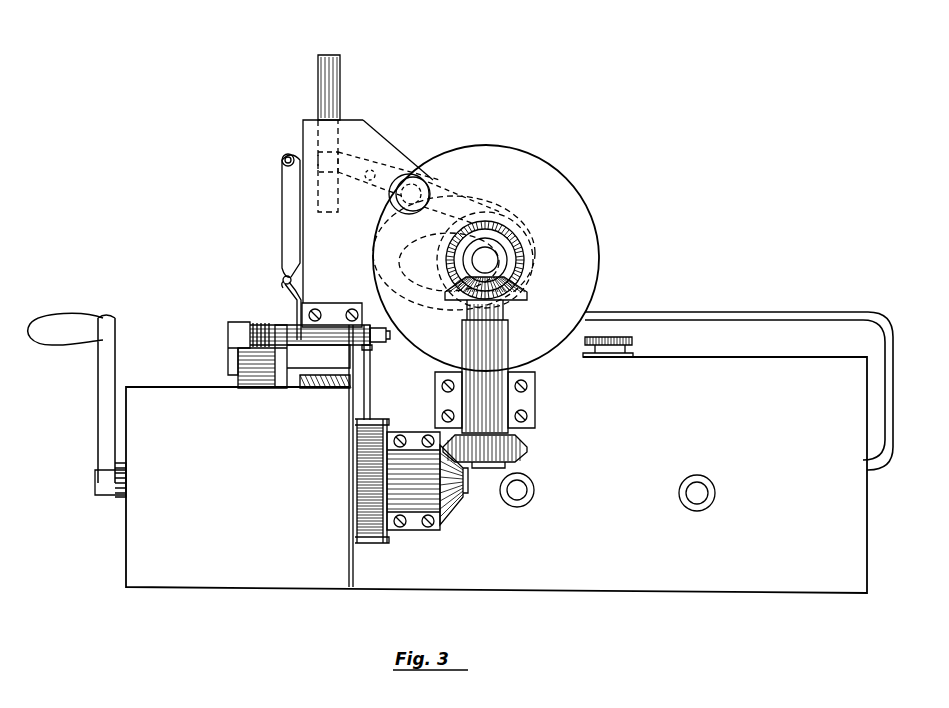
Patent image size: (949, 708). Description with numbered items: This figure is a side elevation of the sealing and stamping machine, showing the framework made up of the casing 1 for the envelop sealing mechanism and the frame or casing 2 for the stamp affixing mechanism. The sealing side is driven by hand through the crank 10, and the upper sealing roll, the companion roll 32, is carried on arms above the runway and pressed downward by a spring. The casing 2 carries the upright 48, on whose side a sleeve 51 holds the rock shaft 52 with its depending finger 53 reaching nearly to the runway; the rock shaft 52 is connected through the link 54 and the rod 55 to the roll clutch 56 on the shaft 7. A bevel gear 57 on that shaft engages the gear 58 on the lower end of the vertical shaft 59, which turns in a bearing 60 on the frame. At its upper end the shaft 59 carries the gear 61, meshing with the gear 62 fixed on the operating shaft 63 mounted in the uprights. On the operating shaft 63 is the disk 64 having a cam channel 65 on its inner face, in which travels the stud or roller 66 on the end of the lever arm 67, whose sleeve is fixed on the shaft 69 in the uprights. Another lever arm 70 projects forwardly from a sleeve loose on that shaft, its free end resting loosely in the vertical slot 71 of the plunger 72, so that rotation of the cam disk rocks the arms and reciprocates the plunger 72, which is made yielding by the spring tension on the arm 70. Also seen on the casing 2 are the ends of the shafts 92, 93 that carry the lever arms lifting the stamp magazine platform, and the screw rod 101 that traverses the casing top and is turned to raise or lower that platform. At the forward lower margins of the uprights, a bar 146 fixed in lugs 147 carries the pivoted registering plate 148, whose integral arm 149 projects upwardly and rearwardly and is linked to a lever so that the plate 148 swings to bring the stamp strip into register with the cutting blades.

The casing 1 is at (128, 548).
The frame or casing 2 is at (870, 478).
The shaft 7 is at (355, 478).
The crank 10 is at (98, 397).
The companion roll 32 is at (250, 378).
The upright 48 is at (352, 128).
The sleeve 51 is at (337, 303).
The rock shaft 52 is at (390, 335).
The depending finger 53 is at (279, 385).
The link 54 is at (375, 350).
The rod 55 is at (371, 392).
The roll clutch 56 is at (375, 543).
The bevel gear 57 is at (455, 514).
The gear 58 is at (527, 455).
The shaft 59 is at (510, 312).
The bearing 60 is at (537, 409).
The gear 61 is at (528, 299).
The gear 62 is at (524, 241).
The operating shaft 63 is at (498, 262).
The disk 64 is at (598, 262).
The cam channel 65 is at (522, 224).
The stud or roller 66 is at (497, 213).
The lever arm 67 is at (465, 196).
The shaft 69 is at (431, 181).
The lever arm 70 is at (406, 150).
The vertical slot 71 is at (378, 132).
The plunger 72 is at (330, 55).
The shaft 92 is at (708, 495).
The shaft 93 is at (527, 493).
The screw rod 101 is at (612, 337).
The bar 146 is at (283, 287).
The lug 147 is at (281, 276).
The registering plate 148 is at (300, 297).
The arm 149 is at (282, 204).